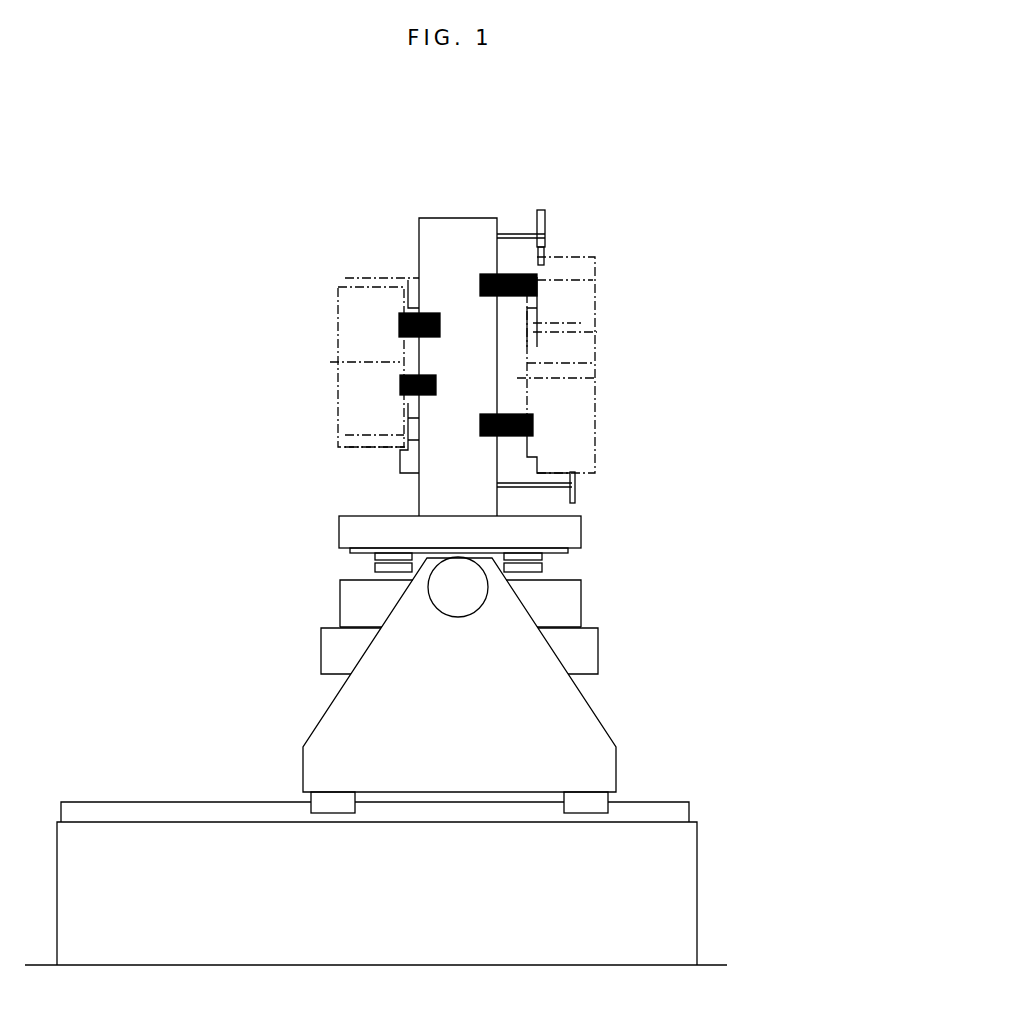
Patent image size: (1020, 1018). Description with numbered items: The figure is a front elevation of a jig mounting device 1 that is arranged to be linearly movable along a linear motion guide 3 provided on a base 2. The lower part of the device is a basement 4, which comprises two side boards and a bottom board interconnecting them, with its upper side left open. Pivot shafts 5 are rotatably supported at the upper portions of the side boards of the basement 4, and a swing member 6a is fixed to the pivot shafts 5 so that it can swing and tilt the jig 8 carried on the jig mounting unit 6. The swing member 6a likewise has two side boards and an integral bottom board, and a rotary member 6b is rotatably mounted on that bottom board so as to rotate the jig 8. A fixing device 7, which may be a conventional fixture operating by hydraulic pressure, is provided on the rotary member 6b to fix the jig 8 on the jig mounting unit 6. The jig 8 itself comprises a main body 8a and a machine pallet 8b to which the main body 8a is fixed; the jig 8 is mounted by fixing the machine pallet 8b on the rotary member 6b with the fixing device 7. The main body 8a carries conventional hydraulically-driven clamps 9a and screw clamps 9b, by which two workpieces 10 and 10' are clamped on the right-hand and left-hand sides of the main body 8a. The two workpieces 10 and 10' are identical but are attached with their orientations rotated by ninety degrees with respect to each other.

The jig mounting device 1 is at (260, 693).
The base 2 is at (665, 953).
The linear motion guide 3 is at (665, 813).
The basement 4 is at (603, 772).
The pivot shaft 5 is at (482, 593).
The jig mounting unit 6 is at (600, 613).
The swing member 6a is at (582, 653).
The rotary member 6b is at (560, 616).
The fixing device 7 is at (345, 557).
The jig 8 is at (399, 330).
The main body 8a is at (485, 233).
The machine pallet 8b is at (340, 514).
The hydraulically-driven clamp 9a is at (547, 237).
The screw clamp 9b is at (400, 322).
The workpiece 10 is at (651, 365).
The workpiece 10' is at (326, 349).